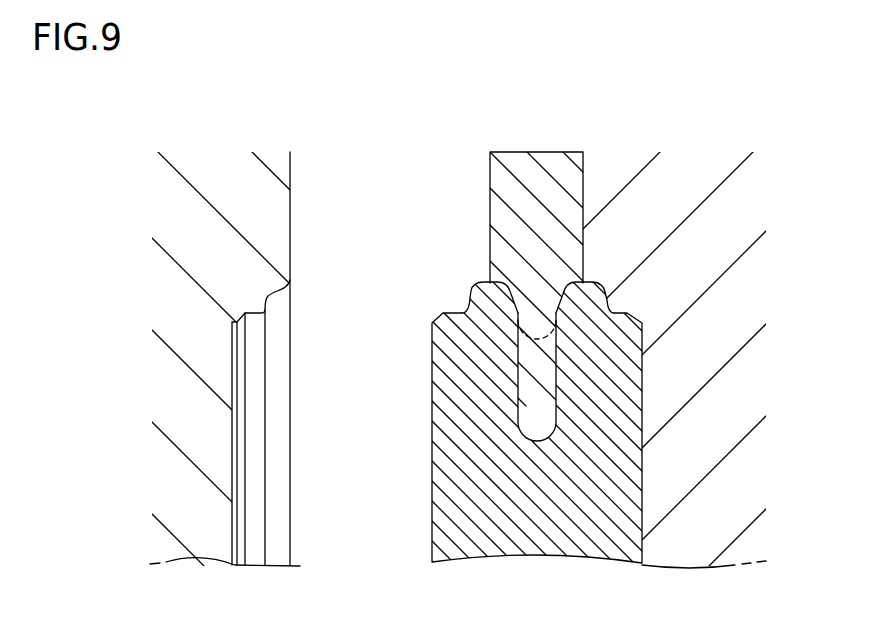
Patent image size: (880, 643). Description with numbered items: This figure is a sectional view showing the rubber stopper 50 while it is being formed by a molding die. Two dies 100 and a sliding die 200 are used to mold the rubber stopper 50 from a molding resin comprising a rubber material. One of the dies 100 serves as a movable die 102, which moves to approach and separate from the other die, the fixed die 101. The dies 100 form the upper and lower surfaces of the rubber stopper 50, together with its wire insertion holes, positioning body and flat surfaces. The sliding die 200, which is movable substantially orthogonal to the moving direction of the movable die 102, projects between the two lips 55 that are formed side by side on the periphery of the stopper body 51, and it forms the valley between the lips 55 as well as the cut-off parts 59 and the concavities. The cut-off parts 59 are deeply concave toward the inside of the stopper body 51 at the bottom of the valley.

The dies 100 is at (440, 346).
The fixed die 101 is at (687, 170).
The movable die 102 is at (208, 163).
The sliding die 200 is at (537, 170).
The rubber stopper 50 is at (490, 359).
The stopper body 51 is at (457, 548).
The lips 55 is at (482, 287).
The cut-off parts 59 is at (524, 440).